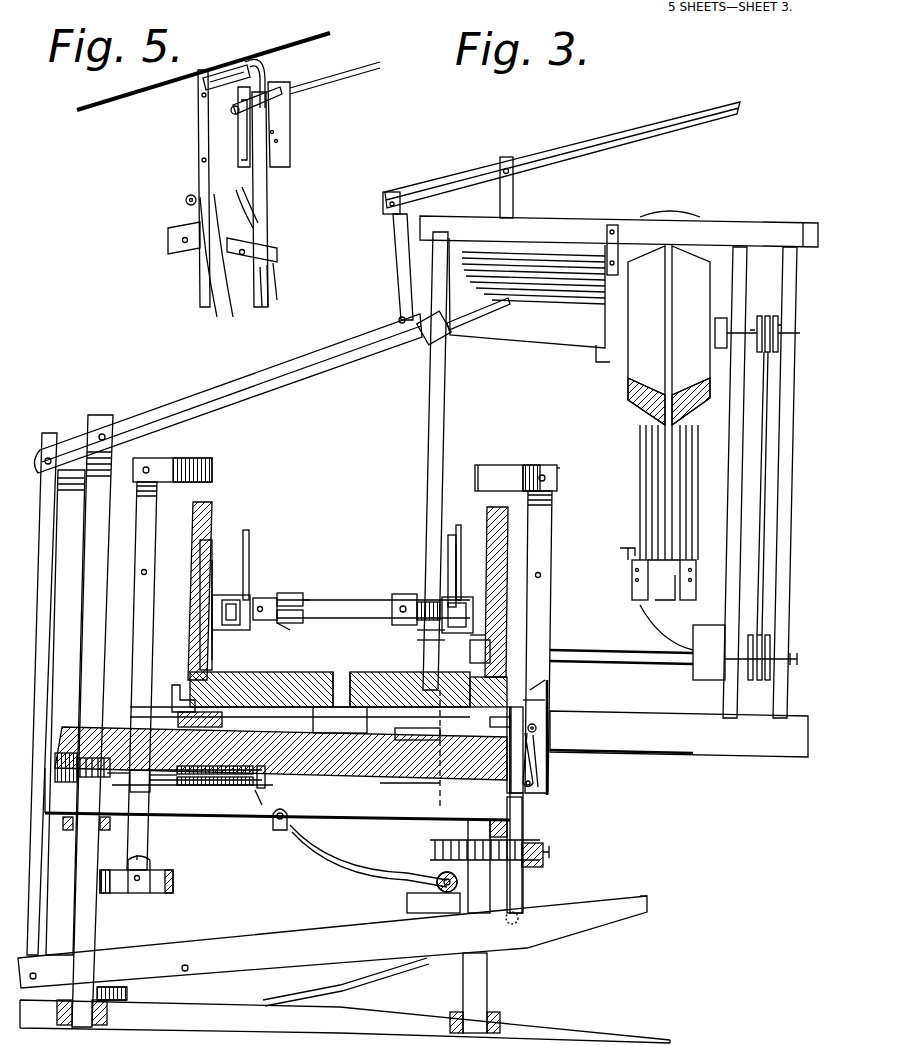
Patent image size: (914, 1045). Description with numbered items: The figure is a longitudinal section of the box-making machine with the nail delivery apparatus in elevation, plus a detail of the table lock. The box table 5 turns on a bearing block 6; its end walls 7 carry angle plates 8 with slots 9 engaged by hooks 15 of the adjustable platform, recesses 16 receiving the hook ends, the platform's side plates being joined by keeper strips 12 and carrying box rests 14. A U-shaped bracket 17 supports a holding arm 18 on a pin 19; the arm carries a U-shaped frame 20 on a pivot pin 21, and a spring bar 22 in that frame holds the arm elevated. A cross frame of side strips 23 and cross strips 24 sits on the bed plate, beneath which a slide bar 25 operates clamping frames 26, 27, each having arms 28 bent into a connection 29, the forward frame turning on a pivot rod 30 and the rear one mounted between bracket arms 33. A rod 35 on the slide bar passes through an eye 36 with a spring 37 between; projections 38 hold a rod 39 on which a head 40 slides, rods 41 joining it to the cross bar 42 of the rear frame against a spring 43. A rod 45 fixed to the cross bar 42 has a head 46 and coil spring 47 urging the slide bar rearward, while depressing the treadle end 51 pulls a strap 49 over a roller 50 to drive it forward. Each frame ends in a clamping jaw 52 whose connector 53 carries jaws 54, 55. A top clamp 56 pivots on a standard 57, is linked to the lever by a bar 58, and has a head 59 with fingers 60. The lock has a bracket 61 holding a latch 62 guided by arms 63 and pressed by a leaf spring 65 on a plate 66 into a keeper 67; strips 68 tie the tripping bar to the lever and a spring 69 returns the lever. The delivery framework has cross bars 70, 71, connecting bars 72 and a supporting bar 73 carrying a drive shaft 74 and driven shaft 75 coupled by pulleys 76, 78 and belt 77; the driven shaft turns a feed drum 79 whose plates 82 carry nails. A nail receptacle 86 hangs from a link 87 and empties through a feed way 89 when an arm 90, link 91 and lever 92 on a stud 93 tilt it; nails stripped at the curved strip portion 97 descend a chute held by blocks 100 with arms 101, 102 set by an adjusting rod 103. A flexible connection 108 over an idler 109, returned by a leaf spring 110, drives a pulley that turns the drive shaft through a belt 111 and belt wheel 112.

In FIG. 3, the box support or table 5 is at (378, 672).
In FIG. 3, the bearing block 6 is at (340, 702).
In FIG. 3, the end walls 7 is at (486, 512).
In FIG. 3, the angle plates 8 is at (487, 635).
In FIG. 3, the slots 9 is at (490, 660).
In FIG. 3, the keeper strips 12 is at (290, 594).
In FIG. 3, the box rests 14 is at (448, 600).
In FIG. 3, the hooks 15 is at (200, 600).
In FIG. 3, the recesses 16 is at (208, 575).
In FIG. 3, the U-shaped bracket 17 is at (292, 630).
In FIG. 3, the holding arms 18 is at (247, 538).
In FIG. 3, the pins 19 is at (230, 598).
In FIG. 3, the U-shaped frame 20 is at (300, 623).
In FIG. 3, the pivot pin 21 is at (258, 598).
In FIG. 3, the spring bar 22 is at (240, 632).
In FIG. 3, the side strips 23 is at (190, 680).
In FIG. 3, the cross strips 24 is at (300, 772).
In FIG. 3, the slide bar 25 is at (277, 799).
In FIG. 3, the forward clamping frame 26 is at (549, 695).
In FIG. 3, the rear clamping frame 27 is at (158, 515).
In FIG. 3, the arms 28 is at (192, 505).
In FIG. 3, the connection 29 is at (152, 866).
In FIG. 5, the pivot rod 30 is at (322, 72).
In FIG. 3, the pivot rod 30 is at (538, 729).
In FIG. 3, the bracket arms 33 is at (174, 884).
In FIG. 3, the rod 35 is at (545, 865).
In FIG. 3, the eye 36 is at (545, 850).
In FIG. 3, the spring 37 is at (512, 868).
In FIG. 3, the spaced projections 38 is at (180, 788).
In FIG. 3, the rod 39 is at (280, 805).
In FIG. 3, the head 40 is at (260, 790).
In FIG. 3, the rods 41 is at (258, 805).
In FIG. 3, the cross bar 42 is at (138, 792).
In FIG. 3, the spring 43 is at (210, 788).
In FIG. 3, the rod 45 is at (118, 768).
In FIG. 3, the head 46 is at (60, 753).
In FIG. 3, the coil spring 47 is at (88, 755).
In FIG. 3, the strap 49 is at (340, 870).
In FIG. 3, the roller 50 is at (436, 884).
In FIG. 3, the treadle end 51 is at (622, 918).
In FIG. 3, the clamping jaw 52 is at (185, 458).
In FIG. 3, the connector 53 is at (560, 470).
In FIG. 3, the jaw 54 is at (482, 464).
In FIG. 3, the jaw 55 is at (522, 464).
In FIG. 3, the top clamp 56 is at (300, 352).
In FIG. 3, the standard 57 is at (92, 518).
In FIG. 3, the bar 58 is at (56, 694).
In FIG. 3, the cross strip or head 59 is at (445, 342).
In FIG. 3, the fingers 60 is at (490, 306).
In FIG. 5, the bracket 61 is at (270, 250).
In FIG. 3, the bracket 61 is at (525, 790).
In FIG. 5, the latch 62 is at (238, 140).
In FIG. 3, the latch 62 is at (536, 700).
In FIG. 5, the arms 63 is at (268, 68).
In FIG. 3, the arms 63 is at (540, 692).
In FIG. 5, the leaf spring 65 is at (228, 80).
In FIG. 3, the leaf spring 65 is at (535, 768).
In FIG. 5, the plate 66 is at (280, 140).
In FIG. 3, the plate 66 is at (540, 755).
In FIG. 5, the keeper 67 is at (210, 195).
In FIG. 3, the keeper 67 is at (552, 665).
In FIG. 5, the strips 68 is at (212, 270).
In FIG. 3, the strips 68 is at (523, 820).
In FIG. 3, the spring 69 is at (372, 975).
In FIG. 3, the upper cross bar 70 is at (580, 222).
In FIG. 3, the lower cross bar 71 is at (679, 734).
In FIG. 3, the connecting bars 72 is at (430, 478).
In FIG. 3, the supporting bar 73 is at (698, 555).
In FIG. 3, the drive shaft 74 is at (98, 930).
In FIG. 3, the driven shaft 75 is at (758, 318).
In FIG. 3, the belt pulley 76 is at (780, 332).
In FIG. 3, the belt 77 is at (768, 416).
In FIG. 3, the belt pulley 78 is at (775, 665).
In FIG. 3, the feed drum 79 is at (680, 245).
In FIG. 3, the drum plates 82 is at (669, 403).
In FIG. 3, the nail receptacle 86 is at (527, 293).
In FIG. 3, the link 87 is at (606, 230).
In FIG. 3, the feed way 89 is at (605, 345).
In FIG. 3, the rearwardly projecting arm 90 is at (398, 316).
In FIG. 3, the link 91 is at (398, 256).
In FIG. 3, the lever 92 is at (640, 130).
In FIG. 3, the stud 93 is at (510, 156).
In FIG. 3, the curved strip portion 97 is at (709, 652).
In FIG. 3, the blocks 100 is at (670, 612).
In FIG. 3, the arm 101 is at (632, 578).
In FIG. 3, the arm 102 is at (698, 565).
In FIG. 3, the adjusting rod 103 is at (626, 546).
In FIG. 3, the flexible connection 108 is at (430, 904).
In FIG. 3, the idler 109 is at (417, 733).
In FIG. 3, the leaf spring 110 is at (400, 785).
In FIG. 3, the belt 111 is at (440, 642).
In FIG. 3, the belt wheel 112 is at (440, 630).